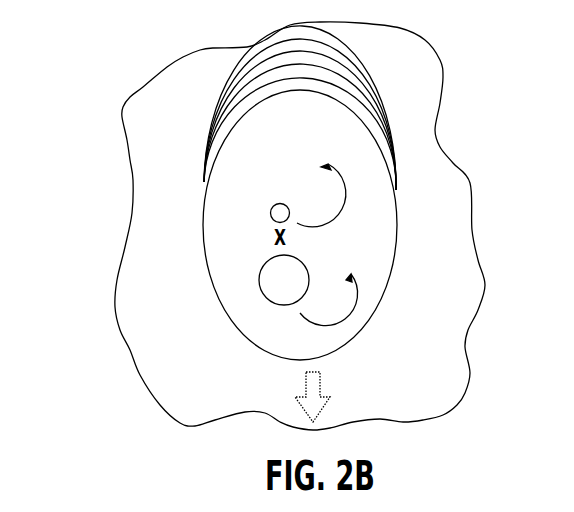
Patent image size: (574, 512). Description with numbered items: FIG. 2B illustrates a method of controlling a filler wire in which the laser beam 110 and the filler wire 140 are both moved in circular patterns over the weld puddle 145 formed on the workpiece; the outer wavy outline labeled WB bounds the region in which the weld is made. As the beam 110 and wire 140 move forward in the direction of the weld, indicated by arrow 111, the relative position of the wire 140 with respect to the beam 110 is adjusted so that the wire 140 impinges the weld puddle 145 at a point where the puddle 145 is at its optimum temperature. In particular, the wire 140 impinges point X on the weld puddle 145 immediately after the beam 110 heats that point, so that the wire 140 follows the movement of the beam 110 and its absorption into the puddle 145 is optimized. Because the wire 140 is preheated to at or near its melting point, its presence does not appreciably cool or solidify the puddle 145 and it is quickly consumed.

The water body WB is at (378, 92).
The weld puddle 145 is at (396, 250).
The filler wire 140 is at (271, 208).
The laser beam 110 is at (259, 288).
The arrow 111 is at (320, 383).